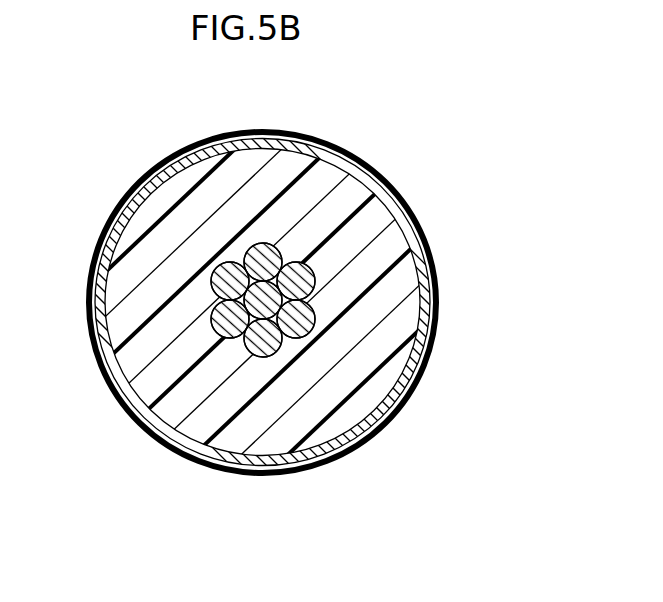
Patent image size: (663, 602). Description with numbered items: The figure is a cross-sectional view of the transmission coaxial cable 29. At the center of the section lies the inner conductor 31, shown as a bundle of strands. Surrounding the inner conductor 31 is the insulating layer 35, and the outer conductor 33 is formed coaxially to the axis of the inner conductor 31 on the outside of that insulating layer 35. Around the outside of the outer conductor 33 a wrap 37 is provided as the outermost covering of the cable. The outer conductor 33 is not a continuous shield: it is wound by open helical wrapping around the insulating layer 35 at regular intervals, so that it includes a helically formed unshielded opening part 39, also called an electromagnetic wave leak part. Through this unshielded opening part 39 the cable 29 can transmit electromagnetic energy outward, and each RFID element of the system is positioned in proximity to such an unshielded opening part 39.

The transmission coaxial cable 29 is at (302, 301).
The inner conductor 31 is at (303, 326).
The outer conductor 33 is at (433, 282).
The insulating layer 35 is at (377, 385).
The wrap 37 is at (114, 220).
The unshielded opening part 39 is at (265, 451).